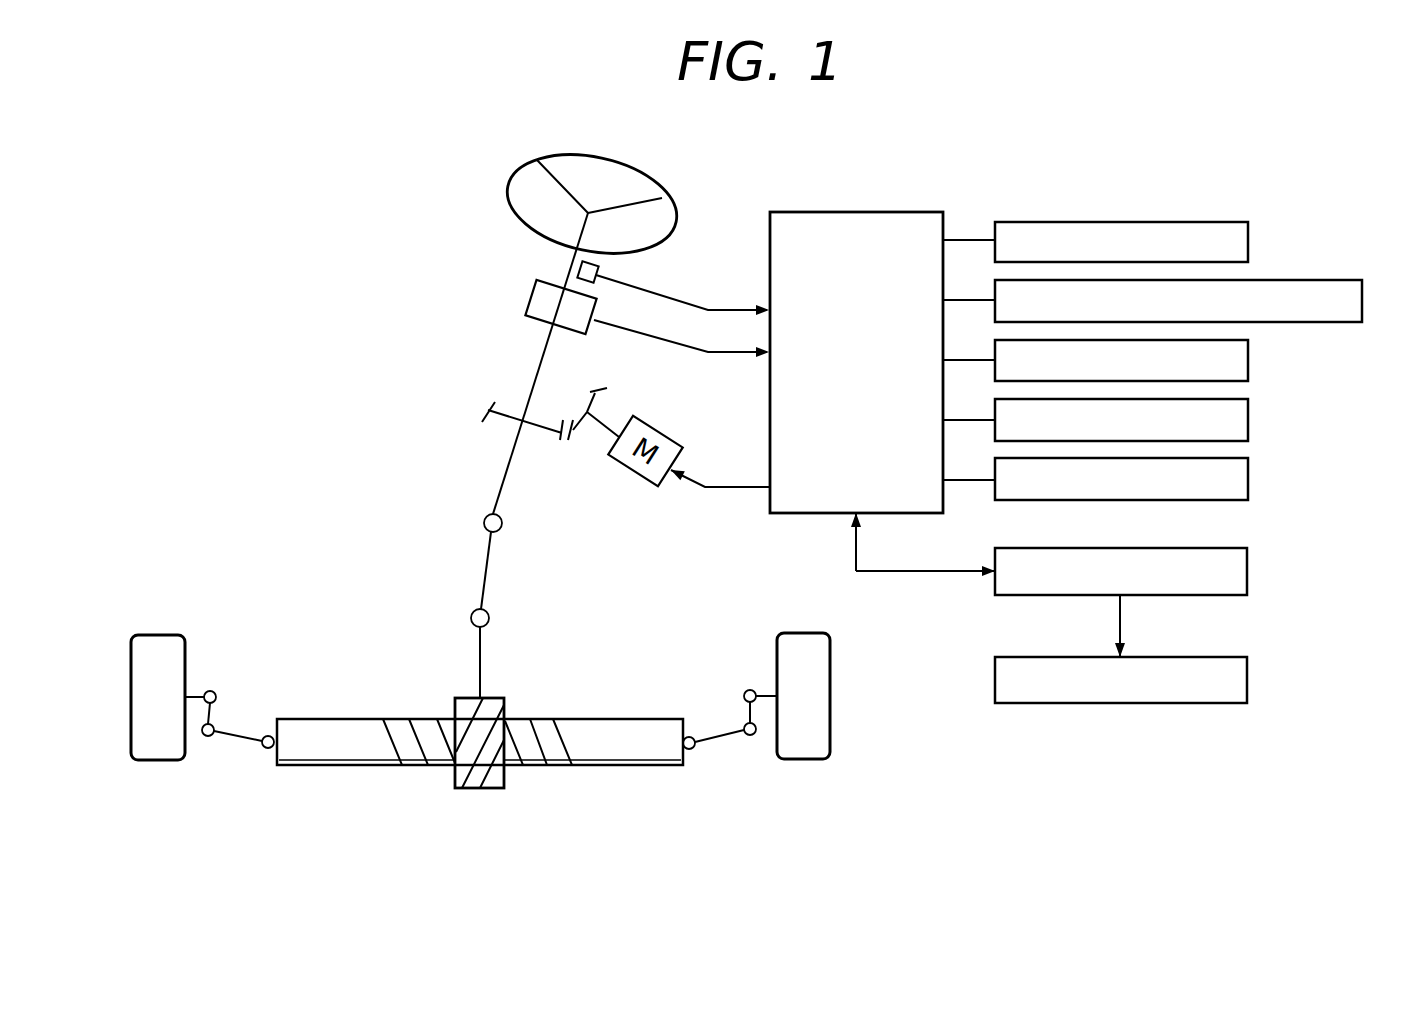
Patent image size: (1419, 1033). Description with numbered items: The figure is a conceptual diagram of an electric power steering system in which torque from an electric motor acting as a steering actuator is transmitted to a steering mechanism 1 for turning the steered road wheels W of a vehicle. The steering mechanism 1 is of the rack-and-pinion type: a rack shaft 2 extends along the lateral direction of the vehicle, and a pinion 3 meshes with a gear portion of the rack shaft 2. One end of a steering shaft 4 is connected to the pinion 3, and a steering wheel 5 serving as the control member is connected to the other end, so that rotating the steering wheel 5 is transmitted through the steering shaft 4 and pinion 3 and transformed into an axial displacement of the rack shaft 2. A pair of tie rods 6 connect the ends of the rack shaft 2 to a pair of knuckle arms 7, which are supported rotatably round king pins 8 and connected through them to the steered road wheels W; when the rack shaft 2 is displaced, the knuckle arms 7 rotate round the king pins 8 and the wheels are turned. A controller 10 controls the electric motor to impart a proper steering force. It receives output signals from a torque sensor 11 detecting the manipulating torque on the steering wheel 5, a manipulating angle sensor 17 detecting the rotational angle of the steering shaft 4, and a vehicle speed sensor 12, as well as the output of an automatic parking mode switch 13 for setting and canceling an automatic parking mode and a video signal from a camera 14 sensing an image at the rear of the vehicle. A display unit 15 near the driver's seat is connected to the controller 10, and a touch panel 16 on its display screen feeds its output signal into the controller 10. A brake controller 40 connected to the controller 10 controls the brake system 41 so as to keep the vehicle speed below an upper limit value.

The steering mechanism 1 is at (582, 800).
The rack shaft 2 is at (355, 766).
The pinion 3 is at (480, 790).
The steering shaft 4 is at (540, 368).
The steering wheel 5 is at (620, 165).
The tie rods 6 is at (235, 738).
The knuckle arms 7 is at (216, 708).
The king pins 8 is at (212, 690).
The controller 10 is at (893, 211).
The torque sensor 11 is at (528, 297).
The vehicle speed sensor 12 is at (1250, 234).
The automatic parking mode switch 13 is at (1364, 297).
The camera 14 is at (1250, 362).
The display unit 15 is at (1250, 422).
The touch panel 16 is at (1250, 482).
The manipulating angle sensor 17 is at (577, 268).
The brake controller 40 is at (1249, 568).
The brake system 41 is at (1249, 679).
The steered road wheels W is at (167, 633).